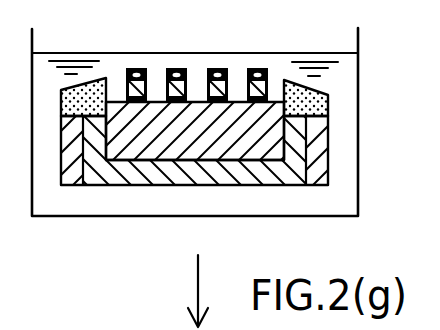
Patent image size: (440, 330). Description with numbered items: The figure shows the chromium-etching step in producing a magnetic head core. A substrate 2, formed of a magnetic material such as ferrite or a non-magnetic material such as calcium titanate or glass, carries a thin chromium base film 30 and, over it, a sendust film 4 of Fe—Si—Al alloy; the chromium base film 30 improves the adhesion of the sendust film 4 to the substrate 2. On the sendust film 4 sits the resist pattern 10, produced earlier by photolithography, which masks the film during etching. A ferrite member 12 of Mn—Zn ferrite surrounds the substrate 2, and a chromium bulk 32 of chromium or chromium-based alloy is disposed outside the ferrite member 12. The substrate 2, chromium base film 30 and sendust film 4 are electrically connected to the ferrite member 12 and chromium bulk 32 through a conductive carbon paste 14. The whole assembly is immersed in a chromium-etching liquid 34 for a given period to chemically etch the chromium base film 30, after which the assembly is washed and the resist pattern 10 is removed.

The substrate 2 is at (165, 148).
The sendust film 4 is at (268, 88).
The resist pattern 10 is at (258, 71).
The ferrite member 12 is at (262, 177).
The carbon paste 14 is at (102, 78).
The chromium base film 30 is at (218, 50).
The chromium bulk 32 is at (67, 176).
The processing bath 34 is at (361, 152).